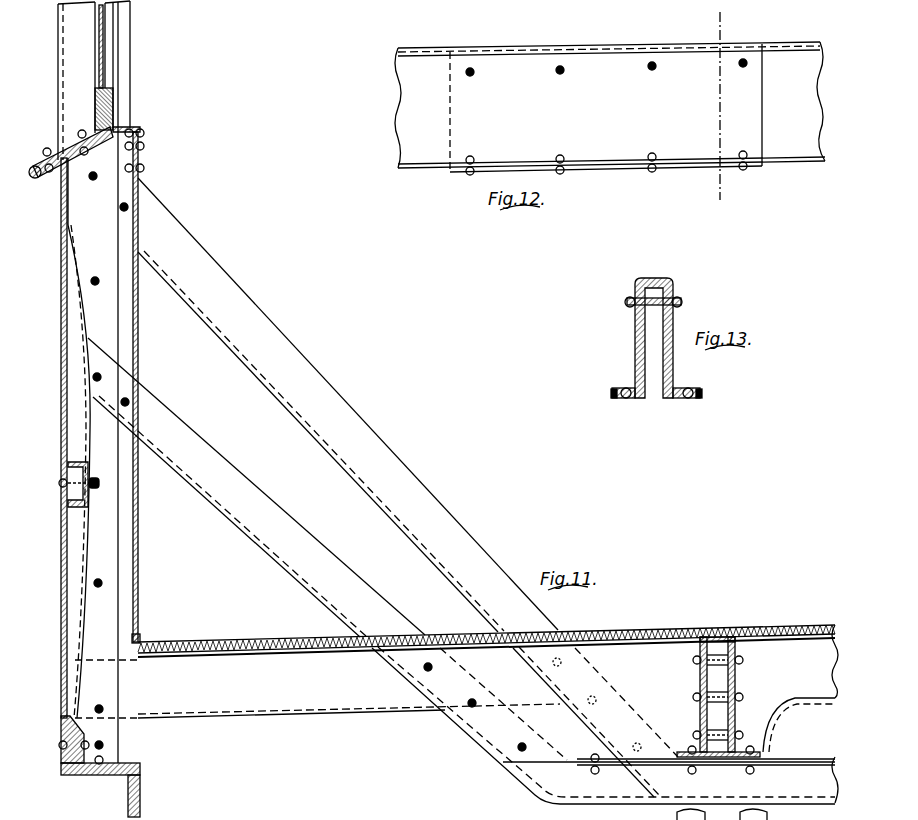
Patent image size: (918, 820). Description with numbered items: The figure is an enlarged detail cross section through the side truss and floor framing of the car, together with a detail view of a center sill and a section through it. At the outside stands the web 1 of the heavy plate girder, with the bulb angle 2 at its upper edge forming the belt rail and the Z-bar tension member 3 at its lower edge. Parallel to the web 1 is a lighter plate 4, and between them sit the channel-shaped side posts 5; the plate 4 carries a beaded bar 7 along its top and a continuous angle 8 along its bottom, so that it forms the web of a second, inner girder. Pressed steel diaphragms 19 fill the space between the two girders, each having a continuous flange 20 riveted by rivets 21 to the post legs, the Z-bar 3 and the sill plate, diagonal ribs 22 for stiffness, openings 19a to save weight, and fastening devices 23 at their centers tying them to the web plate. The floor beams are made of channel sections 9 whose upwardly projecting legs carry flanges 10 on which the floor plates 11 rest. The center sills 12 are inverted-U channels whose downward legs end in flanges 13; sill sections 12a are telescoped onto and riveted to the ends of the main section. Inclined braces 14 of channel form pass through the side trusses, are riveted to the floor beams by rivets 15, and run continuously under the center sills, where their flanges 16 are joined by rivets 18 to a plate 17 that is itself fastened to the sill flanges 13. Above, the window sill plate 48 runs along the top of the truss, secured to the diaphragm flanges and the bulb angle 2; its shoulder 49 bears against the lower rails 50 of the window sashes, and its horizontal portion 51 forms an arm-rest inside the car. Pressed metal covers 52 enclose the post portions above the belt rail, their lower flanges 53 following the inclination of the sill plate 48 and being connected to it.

In FIG. 11, the web of the plate girder 1 is at (61, 416).
In FIG. 11, the bulb angle 2 is at (40, 178).
In FIG. 11, the tension member 3 is at (78, 777).
In FIG. 11, the plate 4 is at (139, 355).
In FIG. 11, the side posts 5 is at (142, 747).
In FIG. 11, the beaded bar or flanged member 7 is at (141, 131).
In FIG. 11, the angle 8 is at (141, 640).
In FIG. 11, the channel-shaped sections 9 is at (488, 714).
In FIG. 11, the laterally projecting flange 10 is at (190, 660).
In FIG. 11, the floor plates 11 is at (272, 645).
In FIG. 11, the center sills 12 is at (700, 670).
In FIG. 12, the center sills 12 is at (606, 109).
In FIG. 13, the center sills 12 is at (637, 335).
In FIG. 12, the center sill sections 12a is at (610, 105).
In FIG. 13, the center sill sections 12a is at (637, 372).
In FIG. 11, the laterally projecting flange 13 is at (688, 750).
In FIG. 12, the laterally projecting flange 13 is at (648, 190).
In FIG. 13, the laterally projecting flange 13 is at (620, 402).
In FIG. 11, the inclined braces or compression members 14 is at (347, 472).
In FIG. 11, the rivets 15 is at (432, 667).
In FIG. 11, the laterally projecting flanges 16 is at (773, 767).
In FIG. 11, the plate 17 is at (797, 733).
In FIG. 11, the rivets 18 is at (598, 772).
In FIG. 11, the pressed steel diaphragms 19 is at (74, 585).
In FIG. 11, the openings 19a is at (67, 690).
In FIG. 11, the continuous flange 20 is at (119, 540).
In FIG. 11, the rivets 21 is at (90, 180).
In FIG. 11, the diagonally extending ribs 22 is at (66, 286).
In FIG. 11, the fastening devices 23 is at (68, 495).
In FIG. 11, the window sill plate or flasher 48 is at (75, 150).
In FIG. 11, the shoulder 49 is at (122, 122).
In FIG. 11, the lower rails of the window sashes 50 is at (112, 102).
In FIG. 11, the horizontally disposed portion 51 is at (132, 128).
In FIG. 11, the pressed metal covers 52 is at (76, 81).
In FIG. 11, the flanges 53 is at (56, 160).